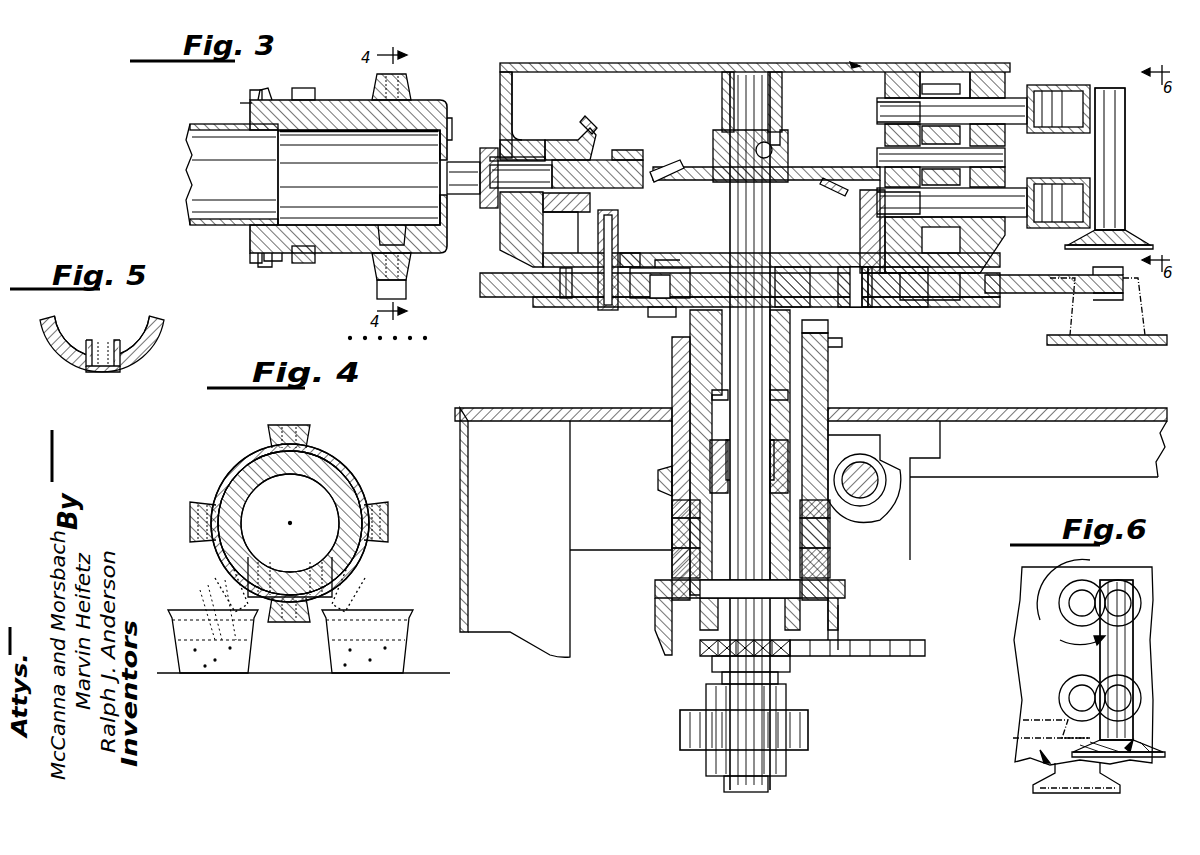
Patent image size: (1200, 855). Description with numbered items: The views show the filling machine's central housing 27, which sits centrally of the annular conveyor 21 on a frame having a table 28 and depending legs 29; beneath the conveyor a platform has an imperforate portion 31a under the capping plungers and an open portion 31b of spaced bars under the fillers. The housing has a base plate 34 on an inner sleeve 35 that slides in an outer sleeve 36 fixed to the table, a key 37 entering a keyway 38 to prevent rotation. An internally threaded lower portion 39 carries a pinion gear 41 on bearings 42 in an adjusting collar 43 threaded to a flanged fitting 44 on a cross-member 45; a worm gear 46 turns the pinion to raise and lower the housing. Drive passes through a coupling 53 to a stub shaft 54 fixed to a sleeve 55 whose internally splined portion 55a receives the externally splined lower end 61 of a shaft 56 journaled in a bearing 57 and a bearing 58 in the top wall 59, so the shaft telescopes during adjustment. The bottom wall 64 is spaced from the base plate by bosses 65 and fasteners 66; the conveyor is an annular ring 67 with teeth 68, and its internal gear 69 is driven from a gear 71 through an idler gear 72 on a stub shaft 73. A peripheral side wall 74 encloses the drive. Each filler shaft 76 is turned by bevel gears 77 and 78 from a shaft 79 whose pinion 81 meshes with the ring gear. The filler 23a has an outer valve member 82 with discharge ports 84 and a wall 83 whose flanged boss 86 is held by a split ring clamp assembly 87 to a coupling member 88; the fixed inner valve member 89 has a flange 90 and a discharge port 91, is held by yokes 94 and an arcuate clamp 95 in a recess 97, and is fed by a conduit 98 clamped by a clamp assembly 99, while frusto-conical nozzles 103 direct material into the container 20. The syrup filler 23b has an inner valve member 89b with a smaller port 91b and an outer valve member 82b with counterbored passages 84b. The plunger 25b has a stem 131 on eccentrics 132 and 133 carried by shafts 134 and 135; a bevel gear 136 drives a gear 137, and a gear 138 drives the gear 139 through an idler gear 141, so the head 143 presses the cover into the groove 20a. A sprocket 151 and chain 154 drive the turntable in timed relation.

In FIG. 4, the container 20 is at (232, 665).
In FIG. 4, the groove 20a is at (182, 612).
In FIG. 3, the conveyor 21 is at (372, 287).
In FIG. 3, the filler 23a is at (238, 103).
In FIG. 5, the filler valve 23b is at (170, 324).
In FIG. 3, the plunger 25b is at (1126, 132).
In FIG. 6, the plunger 25b is at (1100, 658).
In FIG. 3, the central housing 27 is at (853, 63).
In FIG. 3, the table 28 is at (1062, 410).
In FIG. 3, the legs 29 is at (490, 625).
In FIG. 3, the imperforate portion 31a is at (1146, 347).
In FIG. 3, the open portion 31b is at (432, 340).
In FIG. 3, the base plate 34 is at (880, 308).
In FIG. 3, the inner sleeve 35 is at (672, 372).
In FIG. 3, the outer sleeve member 36 is at (830, 383).
In FIG. 3, the key 37 is at (832, 347).
In FIG. 3, the keyway 38 is at (816, 322).
In FIG. 3, the internally threaded lower portion 39 is at (832, 570).
In FIG. 3, the pinion gear 41 is at (660, 490).
In FIG. 3, the bearings 42 is at (822, 516).
In FIG. 3, the adjusting collar 43 is at (832, 546).
In FIG. 3, the flanged fitting 44 is at (846, 590).
In FIG. 3, the cross-member 45 is at (840, 608).
In FIG. 3, the worm gear 46 is at (874, 466).
In FIG. 3, the coupling 53 is at (810, 727).
In FIG. 3, the stub shaft 54 is at (780, 680).
In FIG. 3, the sleeve 55 is at (708, 618).
In FIG. 3, the internally splined portion 55a is at (808, 440).
In FIG. 3, the shaft 56 is at (772, 220).
In FIG. 3, the bearing 57 is at (698, 345).
In FIG. 3, the bearing 58 is at (784, 108).
In FIG. 3, the top wall 59 is at (885, 64).
In FIG. 3, the externally splined lower end 61 is at (748, 413).
In FIG. 3, the bottom wall 64 is at (668, 254).
In FIG. 3, the bosses 65 is at (640, 300).
In FIG. 3, the fasteners 66 is at (665, 318).
In FIG. 3, the annular ring 67 is at (970, 308).
In FIG. 3, the teeth 68 is at (1066, 294).
In FIG. 3, the internal gear 69 is at (912, 308).
In FIG. 3, the gear 71 is at (795, 266).
In FIG. 3, the idler gear 72 is at (852, 266).
In FIG. 3, the stub shaft 73 is at (866, 308).
In FIG. 3, the peripheral side wall 74 is at (512, 112).
In FIG. 3, the shaft 76 is at (600, 158).
In FIG. 3, the bevel gear 77 is at (578, 134).
In FIG. 3, the bevel gear 78 is at (590, 232).
In FIG. 3, the shaft 79 is at (604, 311).
In FIG. 3, the pinion 81 is at (566, 308).
In FIG. 3, the outer valve member 82 is at (442, 104).
In FIG. 4, the outer valve member 82 is at (335, 468).
In FIG. 5, the outer valve member 82b is at (145, 358).
In FIG. 3, the wall 83 is at (450, 131).
In FIG. 3, the discharge ports 84 is at (374, 88).
In FIG. 4, the discharge ports 84 is at (272, 442).
In FIG. 5, the discharge passage 84b is at (92, 370).
In FIG. 3, the flanged boss 86 is at (468, 198).
In FIG. 3, the split ring clamp assembly 87 is at (488, 146).
In FIG. 3, the flanged coupling member 88 is at (500, 207).
In FIG. 3, the inner valve member 89 is at (336, 216).
In FIG. 4, the inner valve member 89 is at (250, 543).
In FIG. 5, the inner valve member 89b is at (75, 336).
In FIG. 3, the flange 90 is at (262, 264).
In FIG. 3, the discharge port 91 is at (390, 225).
In FIG. 4, the discharge port 91 is at (280, 545).
In FIG. 5, the discharge port 91b is at (100, 342).
In FIG. 3, the semi-circular yokes 94 is at (308, 88).
In FIG. 3, the arcuate clamp 95 is at (298, 265).
In FIG. 3, the recess 97 is at (275, 263).
In FIG. 3, the conduit 98 is at (208, 225).
In FIG. 3, the split ring type clamp assembly 99 is at (264, 90).
In FIG. 3, the nozzle 103 is at (372, 274).
In FIG. 4, the nozzle 103 is at (270, 615).
In FIG. 3, the stem 131 is at (1126, 183).
In FIG. 6, the stem 131 is at (1134, 655).
In FIG. 3, the eccentric 132 is at (1078, 84).
In FIG. 6, the eccentric 132 is at (1103, 586).
In FIG. 3, the eccentric 133 is at (1068, 178).
In FIG. 6, the eccentric 133 is at (1100, 682).
In FIG. 3, the shaft 134 is at (1005, 95).
In FIG. 3, the shaft 135 is at (1012, 185).
In FIG. 6, the shaft 135 is at (1070, 702).
In FIG. 3, the bevel gear 136 is at (845, 168).
In FIG. 3, the gear 137 is at (830, 190).
In FIG. 3, the gear 138 is at (942, 226).
In FIG. 3, the gear 139 is at (945, 82).
In FIG. 3, the idler gear 141 is at (915, 138).
In FIG. 3, the head 143 is at (1140, 242).
In FIG. 6, the head 143 is at (1122, 758).
In FIG. 3, the sprocket 151 is at (712, 656).
In FIG. 3, the chain 154 is at (890, 658).